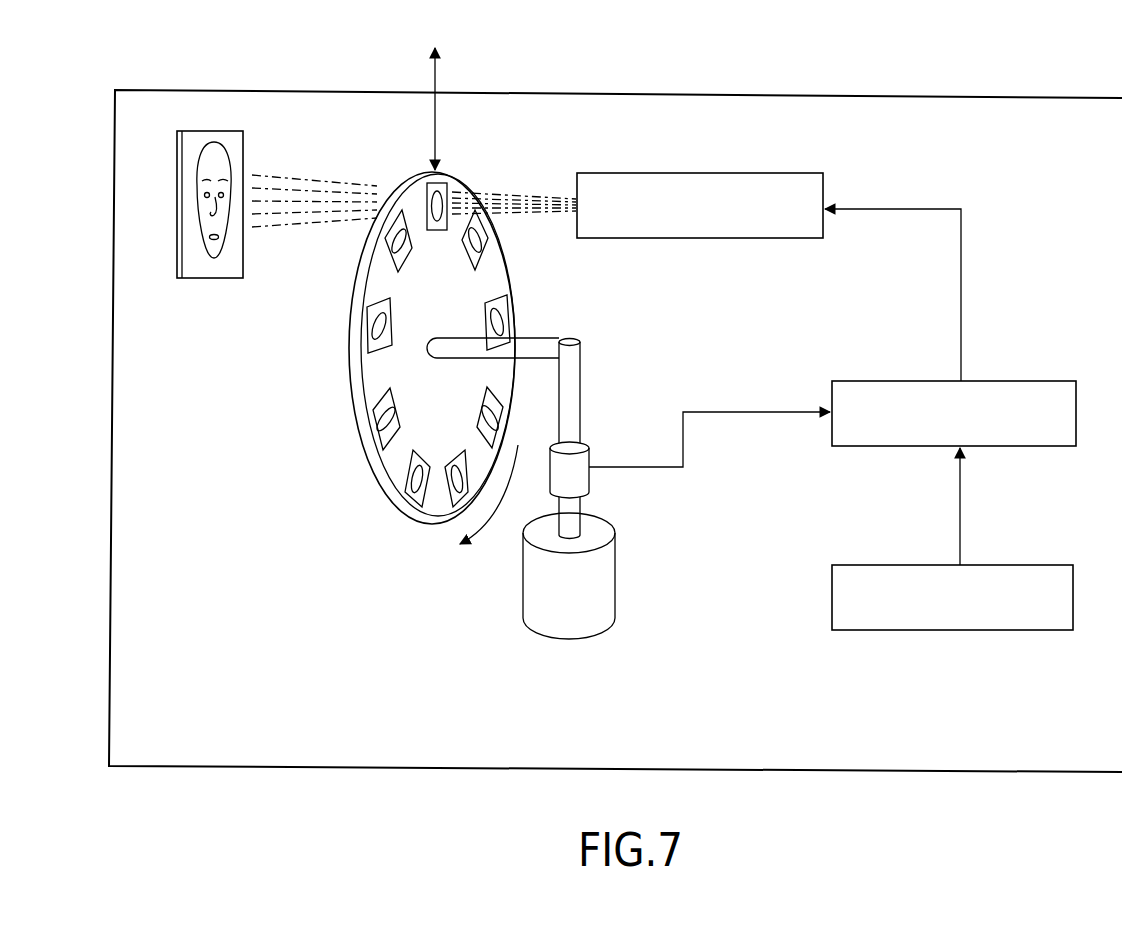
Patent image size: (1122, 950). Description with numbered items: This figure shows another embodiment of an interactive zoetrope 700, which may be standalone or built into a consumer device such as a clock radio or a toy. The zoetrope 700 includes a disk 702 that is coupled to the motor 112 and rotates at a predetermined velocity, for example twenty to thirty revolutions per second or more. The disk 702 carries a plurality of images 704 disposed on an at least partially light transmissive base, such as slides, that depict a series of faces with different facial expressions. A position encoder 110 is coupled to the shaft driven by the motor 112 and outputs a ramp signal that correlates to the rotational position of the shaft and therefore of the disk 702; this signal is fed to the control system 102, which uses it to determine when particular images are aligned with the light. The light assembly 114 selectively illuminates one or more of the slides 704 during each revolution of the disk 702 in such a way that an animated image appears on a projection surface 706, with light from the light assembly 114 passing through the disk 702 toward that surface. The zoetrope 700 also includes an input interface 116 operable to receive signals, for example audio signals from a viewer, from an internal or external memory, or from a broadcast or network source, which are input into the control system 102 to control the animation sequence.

The interactive zoetrope 700 is at (1050, 97).
The disk 702 is at (400, 515).
The images 704 is at (393, 257).
The projection surface 706 is at (219, 279).
The position encoder 110 is at (590, 453).
The motor 112 is at (615, 551).
The light assembly 114 is at (708, 172).
The control system 102 is at (1025, 381).
The input interface 116 is at (867, 565).